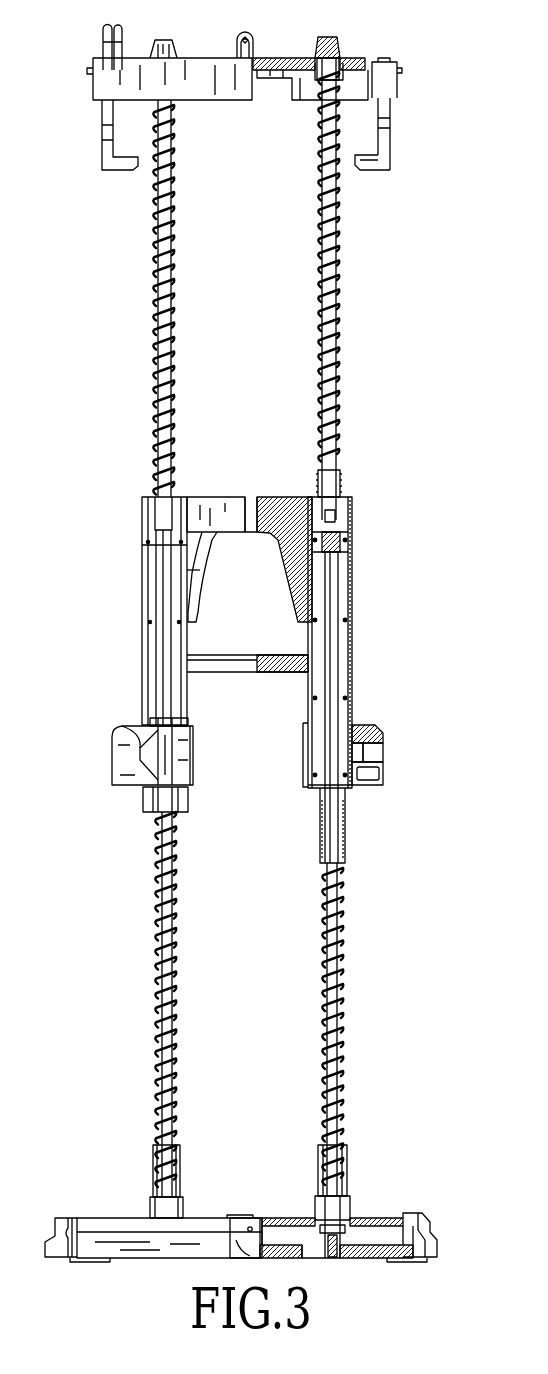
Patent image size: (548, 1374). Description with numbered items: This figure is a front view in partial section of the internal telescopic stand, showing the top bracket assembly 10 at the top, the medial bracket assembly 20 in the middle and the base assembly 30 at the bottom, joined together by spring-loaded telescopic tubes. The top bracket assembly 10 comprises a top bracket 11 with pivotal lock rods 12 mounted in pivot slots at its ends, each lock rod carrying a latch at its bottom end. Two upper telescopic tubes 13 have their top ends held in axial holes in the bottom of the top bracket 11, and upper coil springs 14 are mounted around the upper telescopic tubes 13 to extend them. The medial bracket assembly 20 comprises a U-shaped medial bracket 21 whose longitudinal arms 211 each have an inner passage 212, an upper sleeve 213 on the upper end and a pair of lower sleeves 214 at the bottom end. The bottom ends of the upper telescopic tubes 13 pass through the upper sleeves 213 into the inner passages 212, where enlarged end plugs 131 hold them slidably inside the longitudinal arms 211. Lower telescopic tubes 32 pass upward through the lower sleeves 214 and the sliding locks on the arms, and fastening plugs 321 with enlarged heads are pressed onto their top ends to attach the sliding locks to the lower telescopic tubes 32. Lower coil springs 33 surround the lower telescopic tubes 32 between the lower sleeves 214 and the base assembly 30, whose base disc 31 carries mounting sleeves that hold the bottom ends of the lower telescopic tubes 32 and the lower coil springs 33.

The top bracket assembly 10 is at (426, 66).
The top bracket 11 is at (197, 65).
The pivotal lock rod 12 is at (388, 143).
The upper telescopic tube 13 is at (330, 240).
The upper coil spring 14 is at (336, 290).
The end plug 131 is at (342, 546).
The medial bracket assembly 20 is at (388, 515).
The U-shaped medial bracket 21 is at (230, 500).
The longitudinal arm 211 is at (350, 627).
The inner passage 212 is at (340, 652).
The upper sleeve 213 is at (343, 483).
The lower sleeve 214 is at (170, 832).
The fastening plug 321 is at (160, 722).
The base assembly 30 is at (421, 1166).
The base disc 31 is at (200, 1220).
The lower telescopic tube 32 is at (333, 1008).
The lower coil spring 33 is at (343, 950).